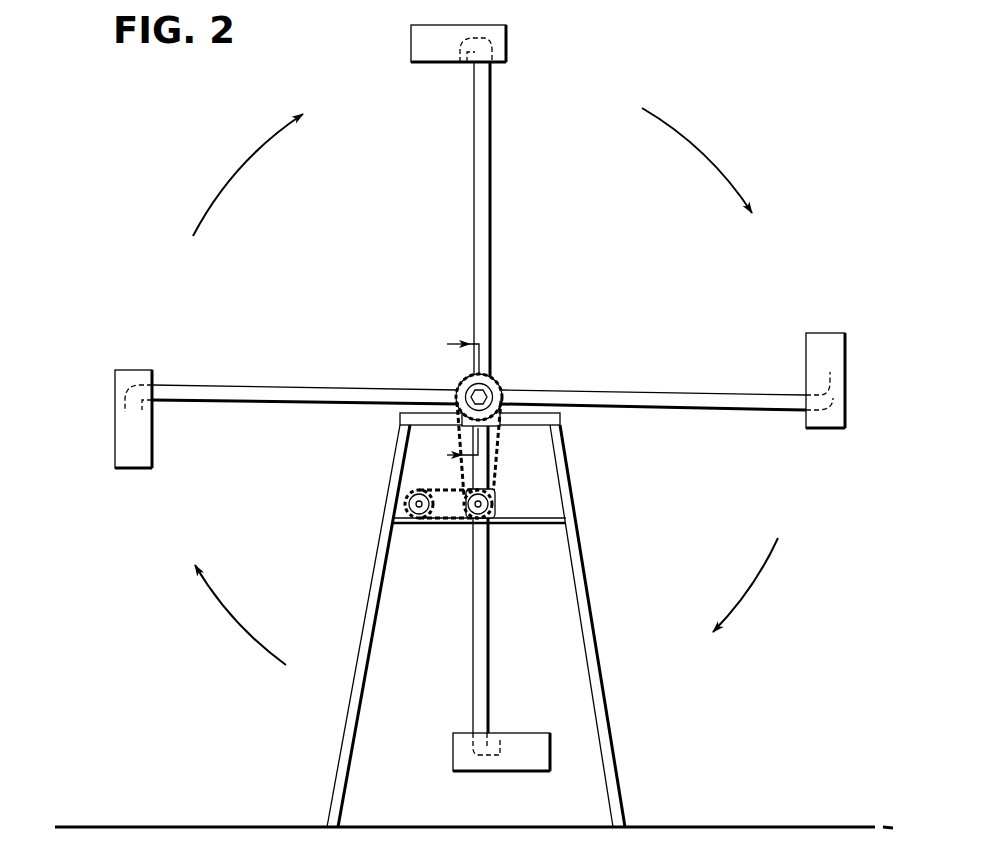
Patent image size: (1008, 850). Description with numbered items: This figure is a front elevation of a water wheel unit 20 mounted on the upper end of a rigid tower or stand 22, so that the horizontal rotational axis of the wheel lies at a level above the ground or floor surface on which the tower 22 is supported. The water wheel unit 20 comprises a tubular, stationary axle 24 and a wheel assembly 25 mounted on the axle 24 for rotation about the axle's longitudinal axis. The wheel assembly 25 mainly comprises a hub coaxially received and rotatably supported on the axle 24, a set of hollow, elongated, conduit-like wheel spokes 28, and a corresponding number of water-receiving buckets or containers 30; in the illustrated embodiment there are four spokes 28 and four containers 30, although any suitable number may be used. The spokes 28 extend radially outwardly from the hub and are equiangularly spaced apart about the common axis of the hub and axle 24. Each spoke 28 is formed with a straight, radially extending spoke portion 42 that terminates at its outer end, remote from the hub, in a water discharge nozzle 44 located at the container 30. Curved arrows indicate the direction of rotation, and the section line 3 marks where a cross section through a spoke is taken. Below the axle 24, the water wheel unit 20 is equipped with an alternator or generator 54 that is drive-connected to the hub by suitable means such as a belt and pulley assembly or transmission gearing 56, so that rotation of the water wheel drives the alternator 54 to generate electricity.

The water wheel unit 20 is at (665, 488).
The tower 22 is at (585, 580).
The axle 24 is at (500, 384).
The wheel assembly 25 is at (466, 226).
The wheel spokes 28 is at (474, 187).
The water-receiving containers 30 is at (415, 62).
The section line 3- 3 is at (454, 399).
The spoke portion 42 is at (474, 289).
The water discharge nozzle 44 is at (463, 62).
The alternator 54 is at (423, 492).
The transmission gearing 56 is at (495, 498).